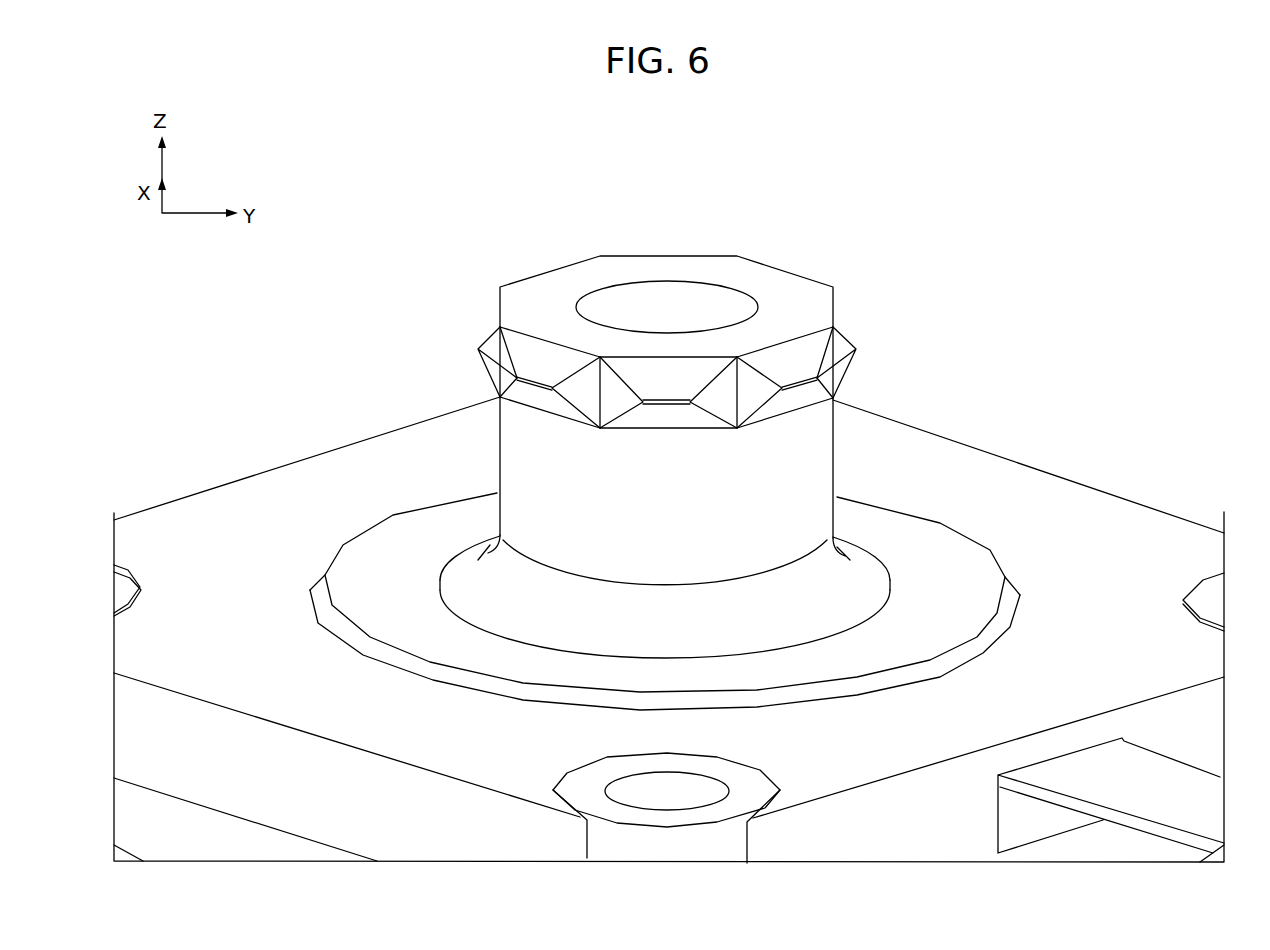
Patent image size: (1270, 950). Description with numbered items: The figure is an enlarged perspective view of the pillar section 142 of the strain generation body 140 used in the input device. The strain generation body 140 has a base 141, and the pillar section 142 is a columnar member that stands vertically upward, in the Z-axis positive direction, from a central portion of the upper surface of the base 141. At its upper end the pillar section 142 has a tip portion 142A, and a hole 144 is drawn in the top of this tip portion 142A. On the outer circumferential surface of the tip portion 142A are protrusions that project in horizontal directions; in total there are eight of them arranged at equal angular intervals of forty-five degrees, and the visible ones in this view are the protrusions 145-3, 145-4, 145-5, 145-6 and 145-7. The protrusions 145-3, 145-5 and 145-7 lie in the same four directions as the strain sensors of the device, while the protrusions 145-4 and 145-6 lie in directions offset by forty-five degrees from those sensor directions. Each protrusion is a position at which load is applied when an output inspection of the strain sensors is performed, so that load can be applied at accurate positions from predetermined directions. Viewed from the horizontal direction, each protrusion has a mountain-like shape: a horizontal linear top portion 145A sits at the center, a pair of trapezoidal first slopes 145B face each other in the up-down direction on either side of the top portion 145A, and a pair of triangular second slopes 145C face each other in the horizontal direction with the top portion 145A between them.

The strain generation body 140 is at (1062, 461).
The base 141 is at (1137, 540).
The pillar section 142 is at (500, 452).
The tip portion 142A is at (830, 270).
The hole in top surface 144 is at (703, 294).
The top portion 145A is at (652, 394).
The first slopes 145B is at (668, 380).
The second slopes 145C is at (552, 388).
The protrusion 145-3 is at (855, 293).
The protrusion 145-4 is at (819, 421).
The protrusion 145-5 is at (699, 444).
The protrusion 145-6 is at (514, 415).
The protrusion 145-7 is at (480, 297).